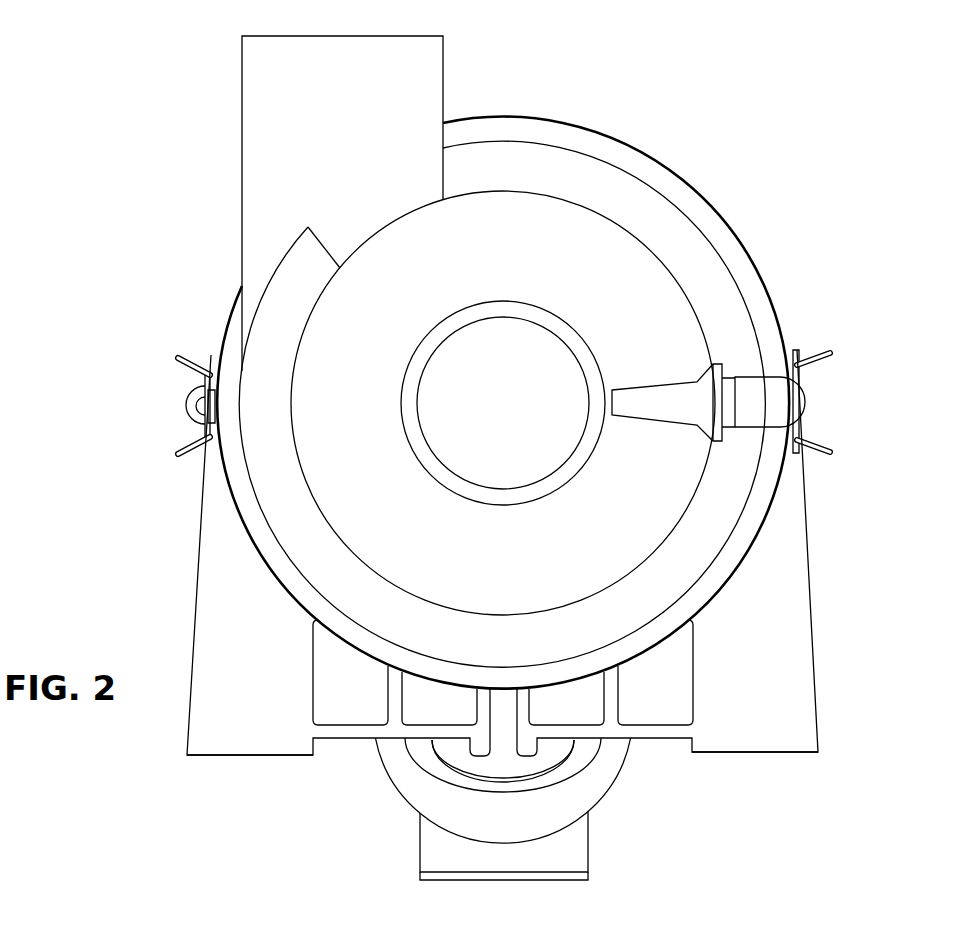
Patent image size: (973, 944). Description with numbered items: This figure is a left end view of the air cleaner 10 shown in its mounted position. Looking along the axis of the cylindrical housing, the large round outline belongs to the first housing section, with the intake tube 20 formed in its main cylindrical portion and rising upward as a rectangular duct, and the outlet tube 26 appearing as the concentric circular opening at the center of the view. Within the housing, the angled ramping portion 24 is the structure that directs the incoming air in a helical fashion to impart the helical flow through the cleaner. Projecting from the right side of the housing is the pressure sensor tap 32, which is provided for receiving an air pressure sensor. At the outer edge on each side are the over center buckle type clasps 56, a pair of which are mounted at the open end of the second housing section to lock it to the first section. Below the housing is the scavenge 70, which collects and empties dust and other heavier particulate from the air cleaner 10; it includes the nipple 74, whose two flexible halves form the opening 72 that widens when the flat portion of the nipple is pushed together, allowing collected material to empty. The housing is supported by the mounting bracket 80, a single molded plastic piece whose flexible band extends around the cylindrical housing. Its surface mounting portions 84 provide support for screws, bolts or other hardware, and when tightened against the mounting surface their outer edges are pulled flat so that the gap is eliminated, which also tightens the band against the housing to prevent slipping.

The air cleaner 10 is at (836, 140).
The intake tube 20 is at (255, 113).
The angled ramping portion 24 is at (668, 215).
The outlet tube 26 is at (502, 308).
The pressure sensor tap 32 is at (655, 395).
The over center buckle type clasps 56 is at (180, 405).
The scavenge 70 is at (605, 792).
The opening 72 is at (450, 880).
The nipple 74 is at (425, 852).
The mounting bracket 80 is at (795, 580).
The surface mounting portions 84 is at (220, 740).